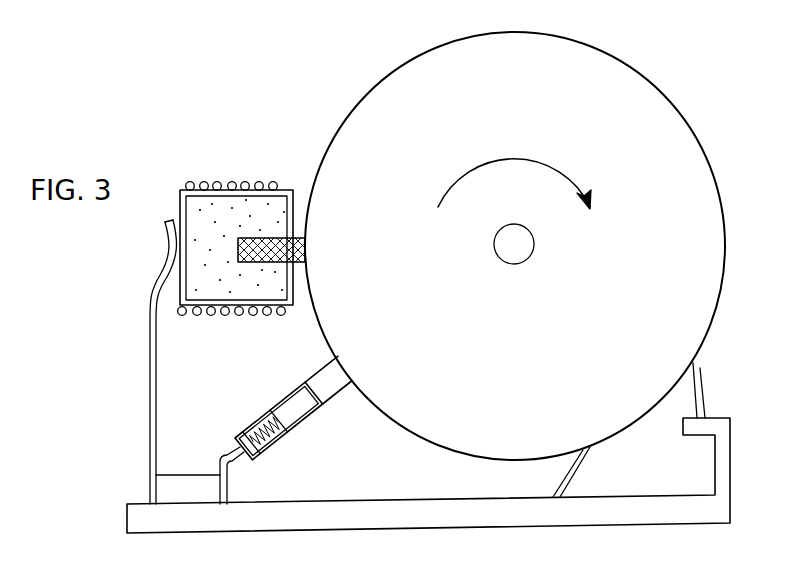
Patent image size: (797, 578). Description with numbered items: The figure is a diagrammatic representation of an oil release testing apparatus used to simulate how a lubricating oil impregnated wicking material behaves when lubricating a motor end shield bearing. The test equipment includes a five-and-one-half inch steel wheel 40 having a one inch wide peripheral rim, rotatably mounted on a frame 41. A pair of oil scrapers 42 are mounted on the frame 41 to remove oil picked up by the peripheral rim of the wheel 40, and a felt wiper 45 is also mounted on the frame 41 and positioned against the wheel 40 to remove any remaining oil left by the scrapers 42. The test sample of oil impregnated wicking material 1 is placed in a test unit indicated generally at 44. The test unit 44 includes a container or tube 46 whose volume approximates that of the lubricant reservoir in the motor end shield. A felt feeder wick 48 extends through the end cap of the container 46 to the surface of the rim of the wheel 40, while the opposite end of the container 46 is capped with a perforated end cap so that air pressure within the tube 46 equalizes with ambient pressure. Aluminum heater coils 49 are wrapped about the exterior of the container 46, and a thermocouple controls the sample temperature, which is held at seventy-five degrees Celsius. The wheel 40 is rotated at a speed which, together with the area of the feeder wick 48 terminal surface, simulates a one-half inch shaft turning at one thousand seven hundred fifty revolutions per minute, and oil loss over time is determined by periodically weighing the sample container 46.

The powdered material 1 is at (198, 205).
The steel wheel 40 is at (652, 98).
The frame 41 is at (403, 504).
The oil scrapers 42 is at (572, 478).
The test unit 44 is at (286, 186).
The felt wiper 45 is at (316, 393).
The container 46 is at (184, 191).
The felt feeder wick 48 is at (304, 250).
The aluminum heater coils 49 is at (234, 183).